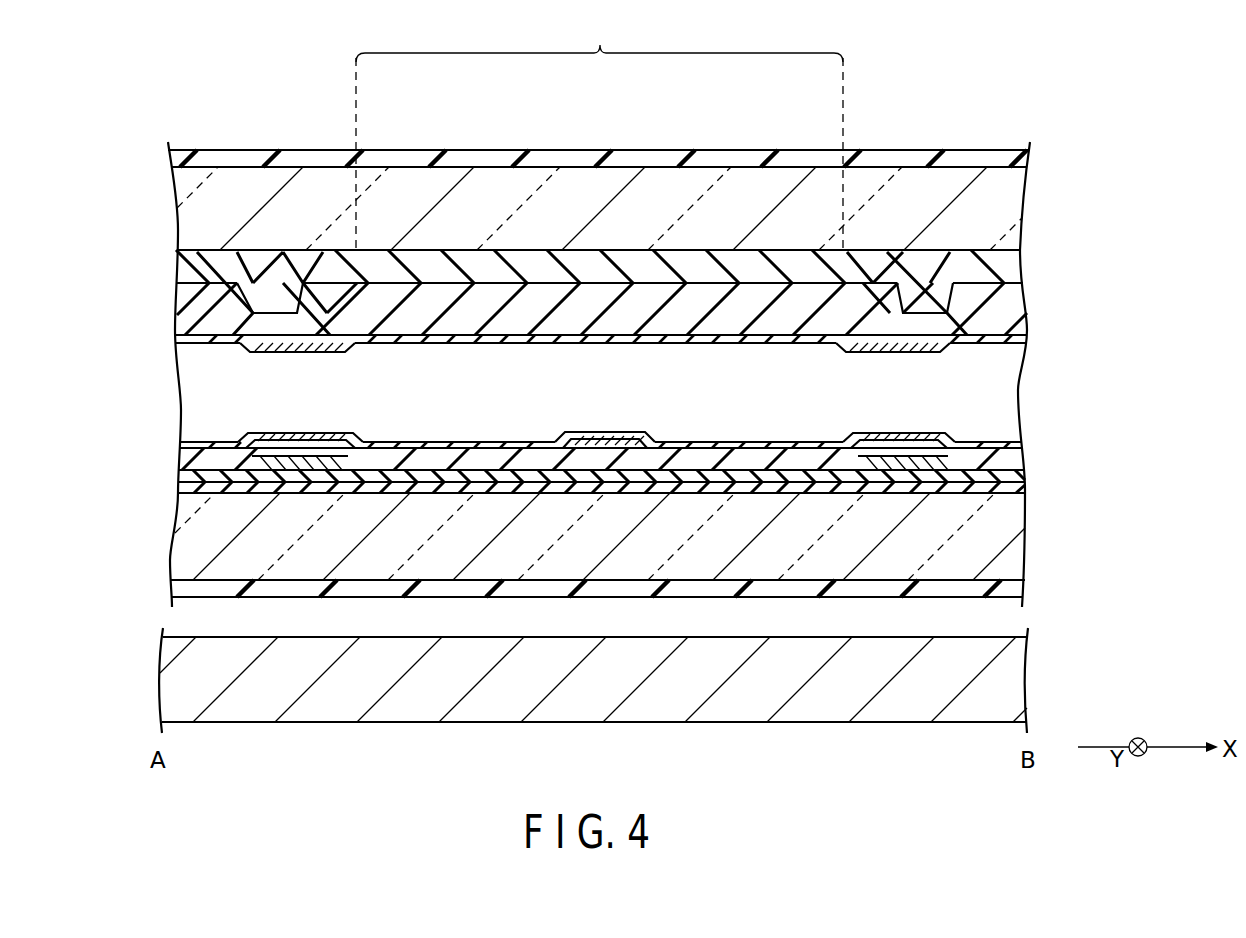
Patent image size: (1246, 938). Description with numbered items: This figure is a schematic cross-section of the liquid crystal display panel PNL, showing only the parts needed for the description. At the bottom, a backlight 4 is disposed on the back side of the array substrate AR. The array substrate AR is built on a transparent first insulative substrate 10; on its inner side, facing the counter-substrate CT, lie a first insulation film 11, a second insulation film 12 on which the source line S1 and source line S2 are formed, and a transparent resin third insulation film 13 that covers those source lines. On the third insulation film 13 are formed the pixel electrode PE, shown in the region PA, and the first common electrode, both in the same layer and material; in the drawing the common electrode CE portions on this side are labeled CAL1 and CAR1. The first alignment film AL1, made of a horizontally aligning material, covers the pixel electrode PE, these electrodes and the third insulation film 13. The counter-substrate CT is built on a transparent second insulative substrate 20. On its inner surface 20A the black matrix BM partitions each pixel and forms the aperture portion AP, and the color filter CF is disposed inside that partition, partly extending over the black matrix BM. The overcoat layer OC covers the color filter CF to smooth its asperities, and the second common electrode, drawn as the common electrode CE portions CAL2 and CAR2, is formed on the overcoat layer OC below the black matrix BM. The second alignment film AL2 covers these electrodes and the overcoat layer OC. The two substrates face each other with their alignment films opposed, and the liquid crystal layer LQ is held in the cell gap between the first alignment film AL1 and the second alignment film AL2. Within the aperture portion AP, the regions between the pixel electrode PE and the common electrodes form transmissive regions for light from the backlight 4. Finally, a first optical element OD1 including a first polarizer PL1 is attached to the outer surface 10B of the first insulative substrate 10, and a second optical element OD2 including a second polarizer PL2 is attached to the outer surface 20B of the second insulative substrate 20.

The liquid crystal display panel PNL is at (612, 367).
The counter-substrate CT is at (591, 238).
The array substrate AR is at (587, 511).
The liquid crystal layer LQ is at (195, 400).
The aperture portion AP is at (599, 133).
The second optical element OD2 is at (560, 172).
The second polarizer PL2 is at (175, 157).
The first optical element OD1 is at (558, 602).
The first polarizer PL1 is at (175, 591).
The second insulative substrate 20 is at (1008, 203).
The inner surface of the second insulative substrate 20A is at (192, 263).
The outer surface of the second insulative substrate 20B is at (245, 156).
The black matrix BM is at (316, 265).
The color filter CF is at (1012, 270).
The overcoat layer OC is at (1010, 325).
The second alignment film AL2 is at (1003, 345).
The first alignment film AL1 is at (965, 443).
The common electrode CE is at (596, 395).
The first left common electrode CAL1 is at (300, 442).
The second left common electrode CAL2 is at (312, 352).
The first right common electrode CAR1 is at (898, 436).
The second right common electrode CAR2 is at (865, 352).
The pixel electrode region PA is at (605, 400).
The pixel electrode PE is at (606, 440).
The third insulation film 13 is at (1020, 452).
The second insulation film 12 is at (1020, 478).
The first insulation film 11 is at (1020, 490).
The first insulative substrate 10 is at (1008, 545).
The outer surface of the first insulative substrate 10B is at (198, 594).
The source line S1 is at (300, 468).
The source line S2 is at (898, 468).
The backlight 4 is at (1008, 690).